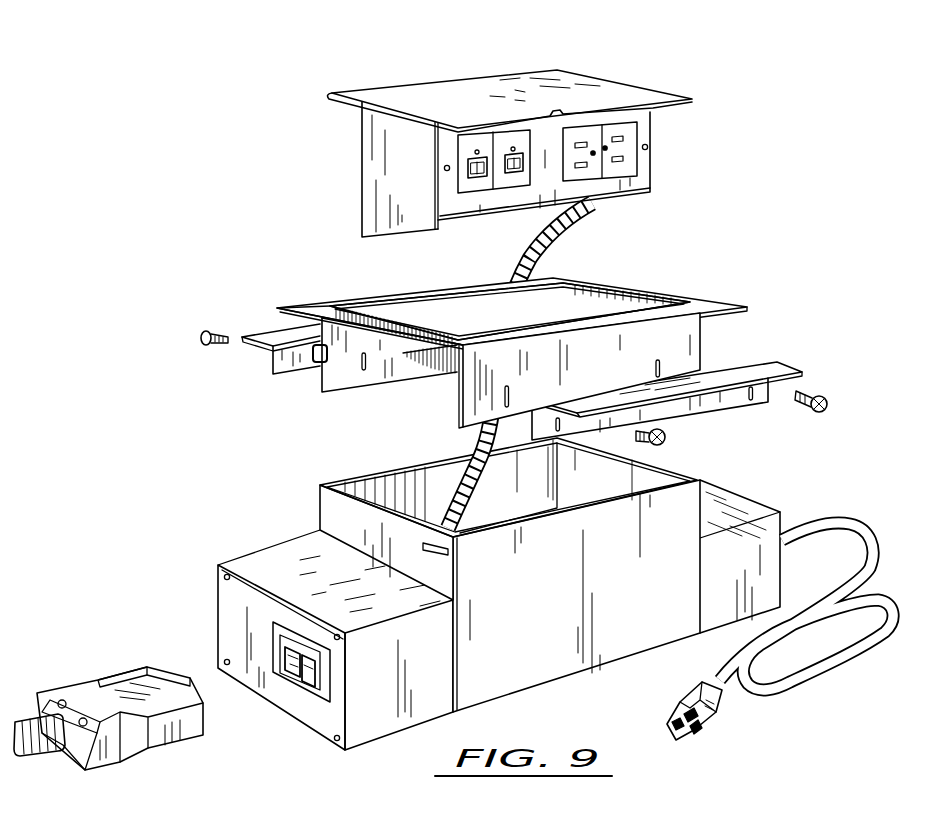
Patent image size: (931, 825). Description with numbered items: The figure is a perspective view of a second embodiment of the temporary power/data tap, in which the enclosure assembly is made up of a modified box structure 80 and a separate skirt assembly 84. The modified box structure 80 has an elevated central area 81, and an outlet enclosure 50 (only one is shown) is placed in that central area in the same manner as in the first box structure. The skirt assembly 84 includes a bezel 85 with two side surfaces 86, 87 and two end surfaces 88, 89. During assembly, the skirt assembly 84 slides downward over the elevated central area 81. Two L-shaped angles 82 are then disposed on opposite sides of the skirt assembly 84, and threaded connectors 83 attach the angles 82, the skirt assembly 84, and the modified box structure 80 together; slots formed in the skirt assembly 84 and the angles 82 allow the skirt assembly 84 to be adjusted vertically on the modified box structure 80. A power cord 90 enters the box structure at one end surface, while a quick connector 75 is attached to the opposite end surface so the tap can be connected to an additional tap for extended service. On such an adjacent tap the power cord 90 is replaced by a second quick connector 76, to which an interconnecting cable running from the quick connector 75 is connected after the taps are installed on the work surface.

The outlet enclosure 50 is at (378, 79).
The quick connector 75 is at (300, 678).
The second quick connector 76 is at (45, 746).
The modified box structure 80 is at (243, 554).
The elevated central area 81 is at (680, 510).
The L-shaped angle 82 is at (273, 358).
The threaded connector 83 is at (201, 334).
The skirt assembly 84 is at (687, 294).
The bezel 85 is at (315, 307).
The side surface 86 is at (335, 373).
The side surface 87 is at (457, 403).
The end surface 88 is at (405, 355).
The end surface 89 is at (615, 305).
The power cord 90 is at (842, 522).